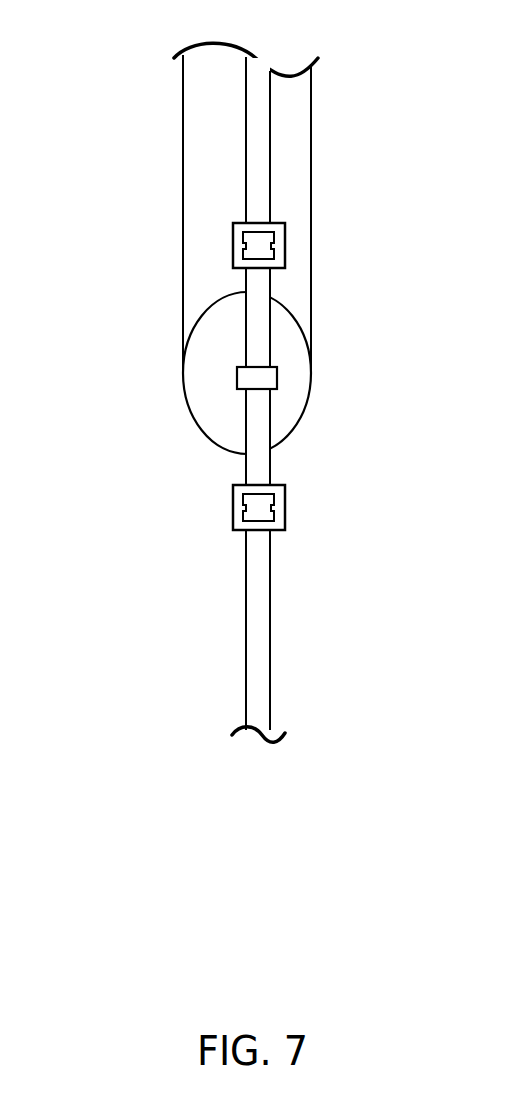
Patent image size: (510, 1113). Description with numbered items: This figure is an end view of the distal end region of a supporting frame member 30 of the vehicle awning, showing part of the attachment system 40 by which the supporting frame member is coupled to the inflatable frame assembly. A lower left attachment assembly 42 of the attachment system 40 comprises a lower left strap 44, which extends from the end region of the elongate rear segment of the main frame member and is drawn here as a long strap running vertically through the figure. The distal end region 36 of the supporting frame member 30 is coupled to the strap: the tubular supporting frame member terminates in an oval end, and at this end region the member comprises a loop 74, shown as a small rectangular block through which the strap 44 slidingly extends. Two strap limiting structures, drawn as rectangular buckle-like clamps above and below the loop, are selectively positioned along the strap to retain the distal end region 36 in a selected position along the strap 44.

The left supporting frame member 30 is at (300, 113).
The right-support distal end region 36 is at (300, 357).
The attachment system 40 is at (136, 691).
The lower left attachment assembly 42 is at (244, 667).
The lower left strap 44 is at (243, 559).
The right loop 74 is at (243, 378).